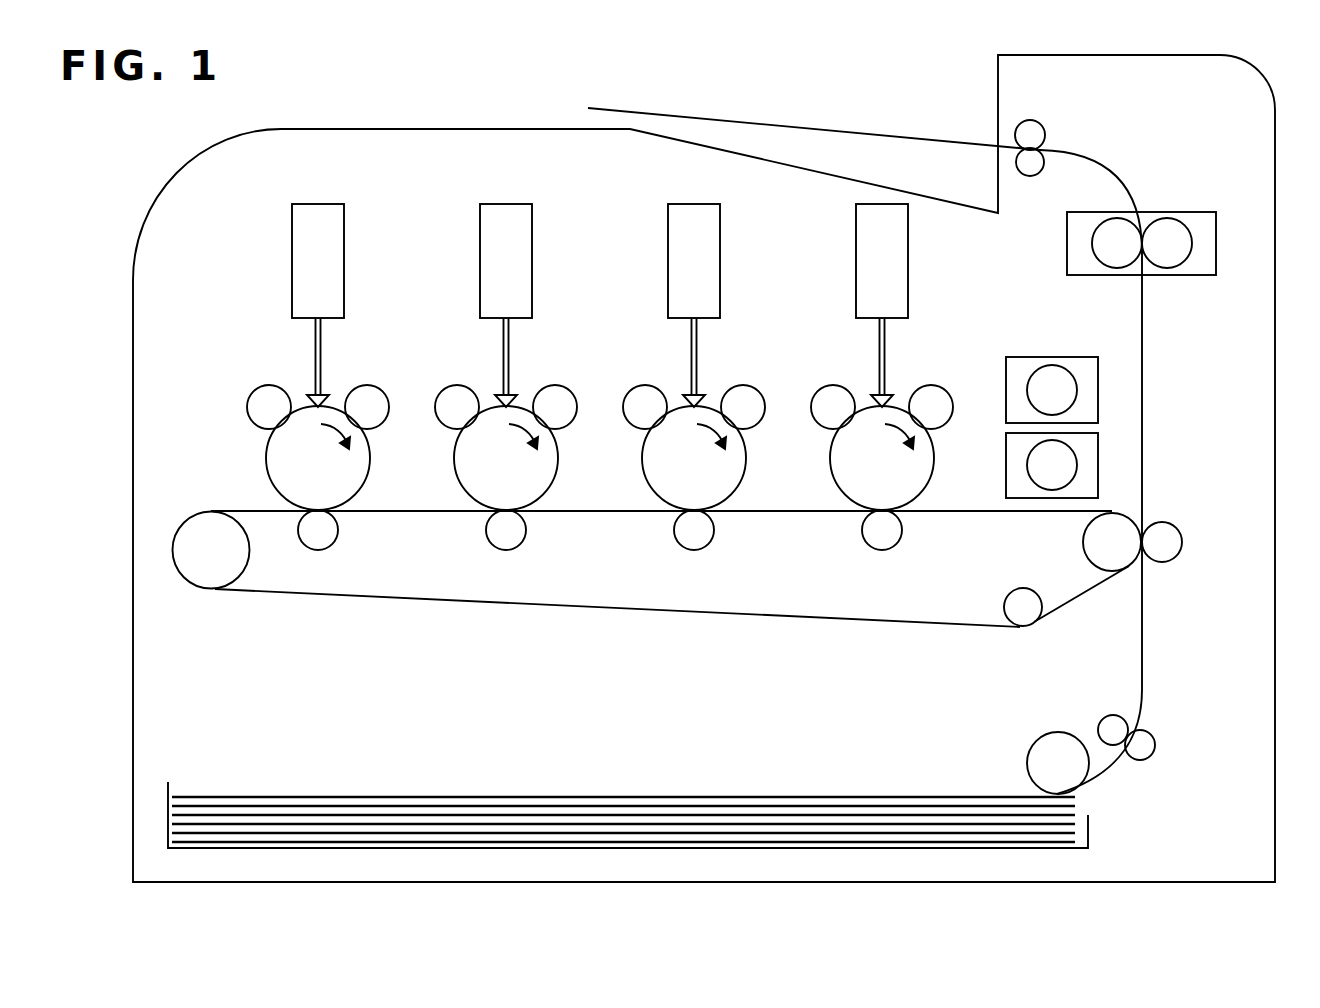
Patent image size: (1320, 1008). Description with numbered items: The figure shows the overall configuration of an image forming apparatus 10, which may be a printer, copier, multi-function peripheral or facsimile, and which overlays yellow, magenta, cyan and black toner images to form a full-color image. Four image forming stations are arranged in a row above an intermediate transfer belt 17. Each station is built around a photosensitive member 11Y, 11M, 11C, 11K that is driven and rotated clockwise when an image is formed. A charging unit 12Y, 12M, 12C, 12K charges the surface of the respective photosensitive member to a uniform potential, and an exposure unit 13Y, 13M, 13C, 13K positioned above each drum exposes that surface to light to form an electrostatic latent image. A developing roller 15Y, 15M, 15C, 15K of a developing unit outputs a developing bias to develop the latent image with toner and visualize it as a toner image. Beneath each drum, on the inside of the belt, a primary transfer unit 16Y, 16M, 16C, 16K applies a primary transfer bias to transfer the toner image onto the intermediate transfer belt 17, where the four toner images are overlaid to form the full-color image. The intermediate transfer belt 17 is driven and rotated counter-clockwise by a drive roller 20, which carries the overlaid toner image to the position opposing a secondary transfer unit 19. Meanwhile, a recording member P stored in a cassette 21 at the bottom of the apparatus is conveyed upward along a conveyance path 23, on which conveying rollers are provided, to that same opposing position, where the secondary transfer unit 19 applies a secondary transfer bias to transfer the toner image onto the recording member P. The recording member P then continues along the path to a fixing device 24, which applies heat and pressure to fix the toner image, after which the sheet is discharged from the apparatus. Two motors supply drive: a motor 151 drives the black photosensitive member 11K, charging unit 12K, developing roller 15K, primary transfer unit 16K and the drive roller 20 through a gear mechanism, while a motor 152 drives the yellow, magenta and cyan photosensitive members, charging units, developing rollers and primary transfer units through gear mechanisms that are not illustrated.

The image forming apparatus 10 is at (206, 153).
The photosensitive member 11Y is at (335, 493).
The photosensitive member 11M is at (523, 493).
The photosensitive member 11C is at (711, 493).
The photosensitive member 11K is at (899, 493).
The charging unit 12Y is at (263, 397).
The charging unit 12M is at (451, 397).
The charging unit 12C is at (639, 397).
The charging unit 12K is at (827, 397).
The exposure unit 13Y is at (319, 203).
The exposure unit 13M is at (507, 203).
The exposure unit 13C is at (695, 203).
The exposure unit 13K is at (883, 203).
The developing roller 15Y is at (361, 397).
The developing roller 15M is at (549, 397).
The developing roller 15C is at (737, 397).
The developing roller 15K is at (925, 397).
The primary transfer unit 16Y is at (325, 535).
The primary transfer unit 16M is at (513, 535).
The primary transfer unit 16C is at (701, 535).
The primary transfer unit 16K is at (889, 535).
The intermediate transfer belt 17 is at (650, 612).
The secondary transfer unit 19 is at (1168, 548).
The drive roller 20 is at (1095, 548).
The cassette 21 is at (1088, 832).
The conveyance path 23 is at (1142, 647).
The fixing device 24 is at (1197, 222).
The motor 151 is at (1090, 477).
The motor 152 is at (1090, 383).
The recording member P is at (700, 795).